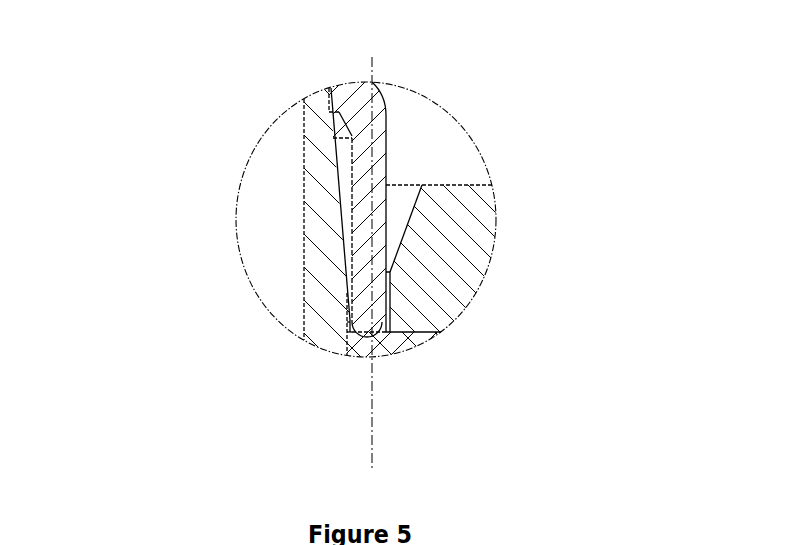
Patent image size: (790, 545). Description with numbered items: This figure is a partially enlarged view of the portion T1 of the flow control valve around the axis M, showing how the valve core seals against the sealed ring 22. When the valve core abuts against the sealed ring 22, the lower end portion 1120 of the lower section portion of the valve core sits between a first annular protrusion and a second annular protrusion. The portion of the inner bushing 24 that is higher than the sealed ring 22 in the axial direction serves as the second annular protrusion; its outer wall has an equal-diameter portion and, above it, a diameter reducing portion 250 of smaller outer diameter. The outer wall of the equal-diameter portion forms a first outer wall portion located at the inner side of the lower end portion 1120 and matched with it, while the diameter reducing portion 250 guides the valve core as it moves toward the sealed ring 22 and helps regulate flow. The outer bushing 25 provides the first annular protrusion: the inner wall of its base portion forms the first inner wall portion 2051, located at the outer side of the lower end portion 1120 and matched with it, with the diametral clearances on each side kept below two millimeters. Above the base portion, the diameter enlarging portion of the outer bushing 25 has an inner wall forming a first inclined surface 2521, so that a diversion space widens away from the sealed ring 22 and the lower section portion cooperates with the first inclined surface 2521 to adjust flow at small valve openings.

The enlarged detail region T1 is at (481, 151).
The center axis M is at (372, 250).
The inner bushing 24 is at (322, 258).
The diameter reducing portion 250 is at (323, 212).
The first inner wall portion 2051 is at (397, 296).
The lower end portion 1120 is at (391, 311).
The outer bushing 25 is at (471, 222).
The first inclined surface 2521 is at (411, 229).
The sealed ring 22 is at (388, 349).